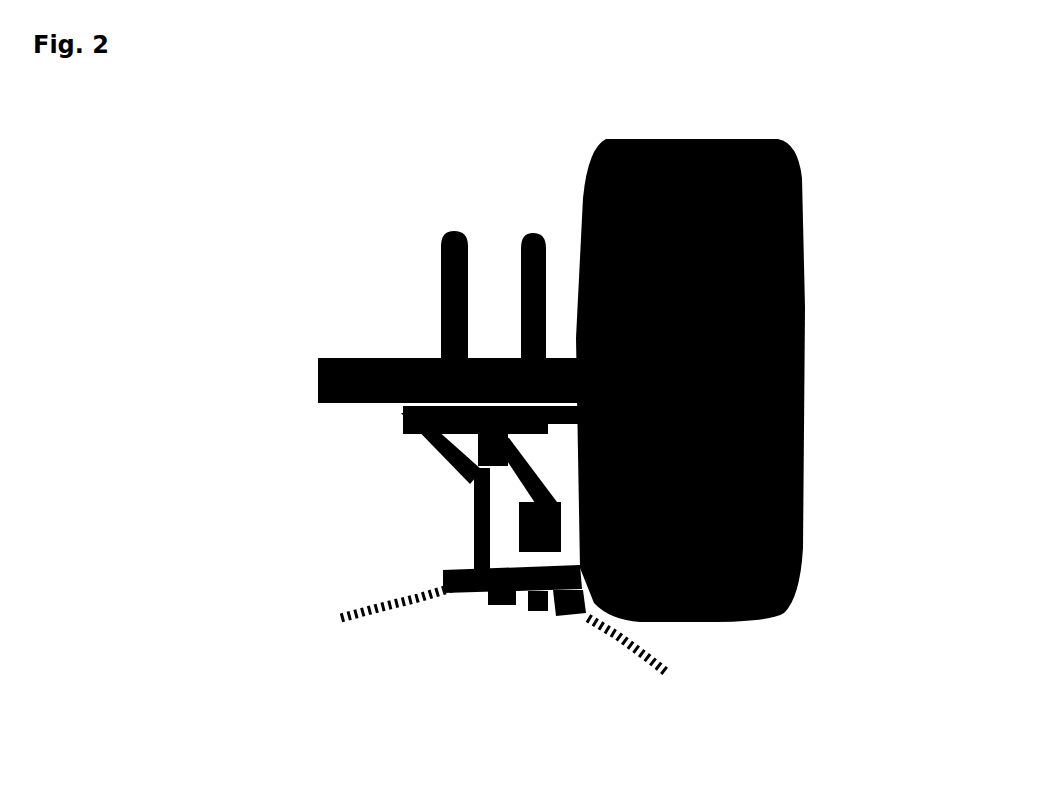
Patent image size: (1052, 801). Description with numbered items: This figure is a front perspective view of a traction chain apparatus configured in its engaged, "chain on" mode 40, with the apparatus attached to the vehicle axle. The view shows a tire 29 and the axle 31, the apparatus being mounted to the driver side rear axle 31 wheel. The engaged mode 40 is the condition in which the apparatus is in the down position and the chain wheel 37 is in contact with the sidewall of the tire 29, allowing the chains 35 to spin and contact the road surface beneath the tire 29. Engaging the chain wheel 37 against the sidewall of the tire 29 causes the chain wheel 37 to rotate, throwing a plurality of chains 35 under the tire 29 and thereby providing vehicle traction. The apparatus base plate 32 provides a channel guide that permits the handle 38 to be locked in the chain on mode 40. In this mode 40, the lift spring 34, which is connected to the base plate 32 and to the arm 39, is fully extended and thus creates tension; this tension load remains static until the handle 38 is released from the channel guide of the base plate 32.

The tire 29 is at (805, 215).
The axle 31 is at (328, 330).
The base plate 32 is at (390, 405).
The lift spring 34 is at (410, 447).
The chains 35 is at (378, 623).
The chain wheel 37 is at (495, 590).
The handle 38 is at (450, 525).
The arm 39 is at (563, 612).
The chain on mode 40 is at (886, 630).